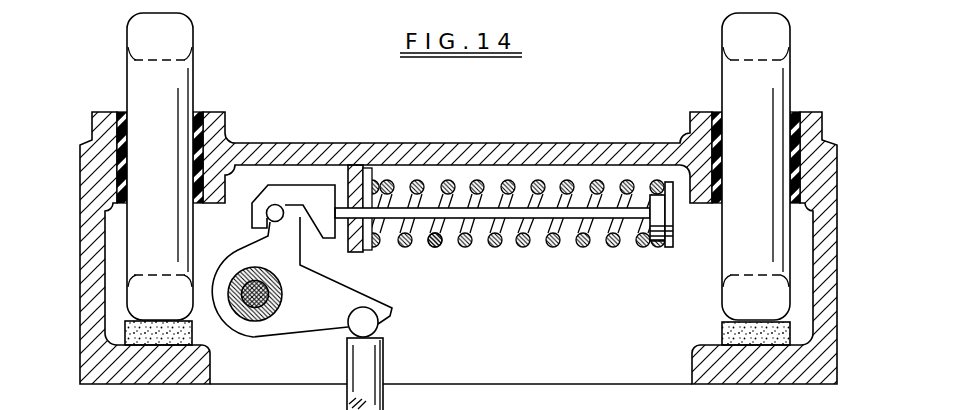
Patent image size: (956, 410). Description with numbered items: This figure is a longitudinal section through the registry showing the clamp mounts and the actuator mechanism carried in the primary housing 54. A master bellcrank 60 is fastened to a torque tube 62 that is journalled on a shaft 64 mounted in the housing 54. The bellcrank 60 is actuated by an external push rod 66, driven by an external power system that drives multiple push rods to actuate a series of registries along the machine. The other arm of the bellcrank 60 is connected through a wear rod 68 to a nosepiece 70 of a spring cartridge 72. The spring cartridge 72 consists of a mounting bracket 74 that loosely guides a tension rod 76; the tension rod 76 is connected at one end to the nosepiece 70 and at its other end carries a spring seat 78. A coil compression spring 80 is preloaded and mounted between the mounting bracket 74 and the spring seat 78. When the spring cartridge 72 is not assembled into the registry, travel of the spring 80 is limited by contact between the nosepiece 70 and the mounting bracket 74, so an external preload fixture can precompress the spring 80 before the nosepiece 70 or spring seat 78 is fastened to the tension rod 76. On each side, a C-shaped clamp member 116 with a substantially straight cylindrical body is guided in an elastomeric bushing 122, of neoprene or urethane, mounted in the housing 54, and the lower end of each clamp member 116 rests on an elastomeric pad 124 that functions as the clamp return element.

The primary housing 54 is at (838, 283).
The master bellcrank 60 is at (356, 293).
The torque tube 62 is at (262, 316).
The shaft 64 is at (266, 298).
The push rod 66 is at (375, 366).
The wear rod 68 is at (278, 208).
The nosepiece 70 is at (277, 185).
The spring cartridge 72 is at (494, 251).
The mounting bracket 74 is at (395, 145).
The tension rod 76 is at (532, 215).
The spring seat 78 is at (677, 237).
The coil compression spring 80 is at (438, 246).
The clamp member 116 is at (133, 33).
The elastomeric bushing 122 is at (195, 113).
The elastomeric pad 124 is at (723, 334).